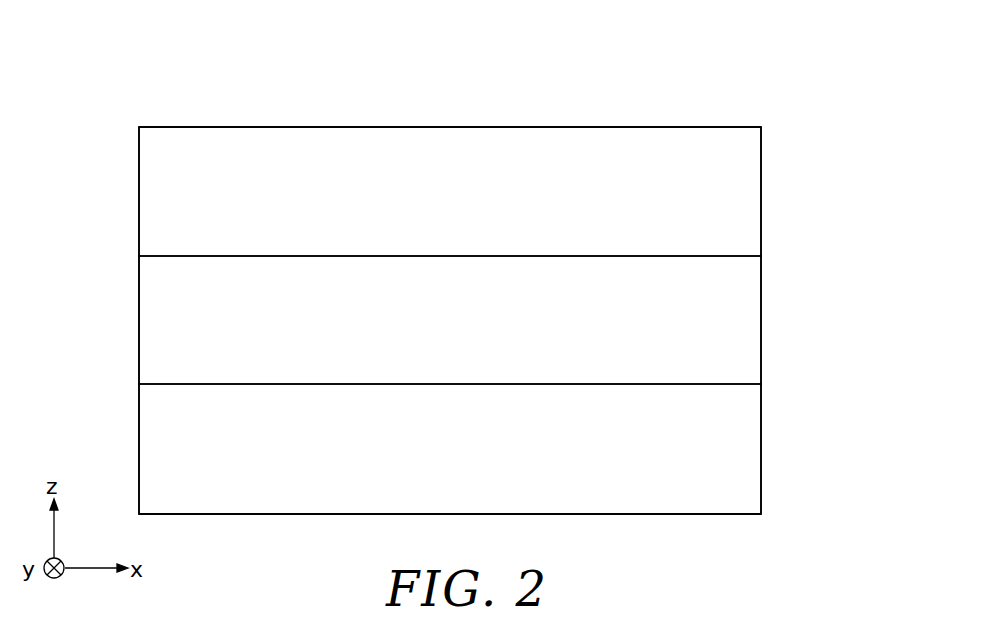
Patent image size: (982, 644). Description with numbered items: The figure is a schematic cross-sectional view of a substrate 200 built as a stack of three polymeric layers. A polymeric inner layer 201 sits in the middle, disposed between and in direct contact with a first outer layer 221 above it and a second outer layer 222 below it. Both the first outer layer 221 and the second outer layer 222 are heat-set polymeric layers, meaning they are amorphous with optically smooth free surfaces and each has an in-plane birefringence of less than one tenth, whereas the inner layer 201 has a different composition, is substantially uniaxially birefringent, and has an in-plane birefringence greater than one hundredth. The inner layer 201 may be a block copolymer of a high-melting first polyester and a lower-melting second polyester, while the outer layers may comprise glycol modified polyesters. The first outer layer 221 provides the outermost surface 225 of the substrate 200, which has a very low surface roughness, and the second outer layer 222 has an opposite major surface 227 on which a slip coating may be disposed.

The substrate 200 is at (187, 65).
The outermost surface 225 is at (648, 127).
The first outer layer 221 is at (733, 189).
The polymeric inner layer 201 is at (733, 319).
The second outer layer 222 is at (733, 452).
The major surface 227 is at (247, 515).